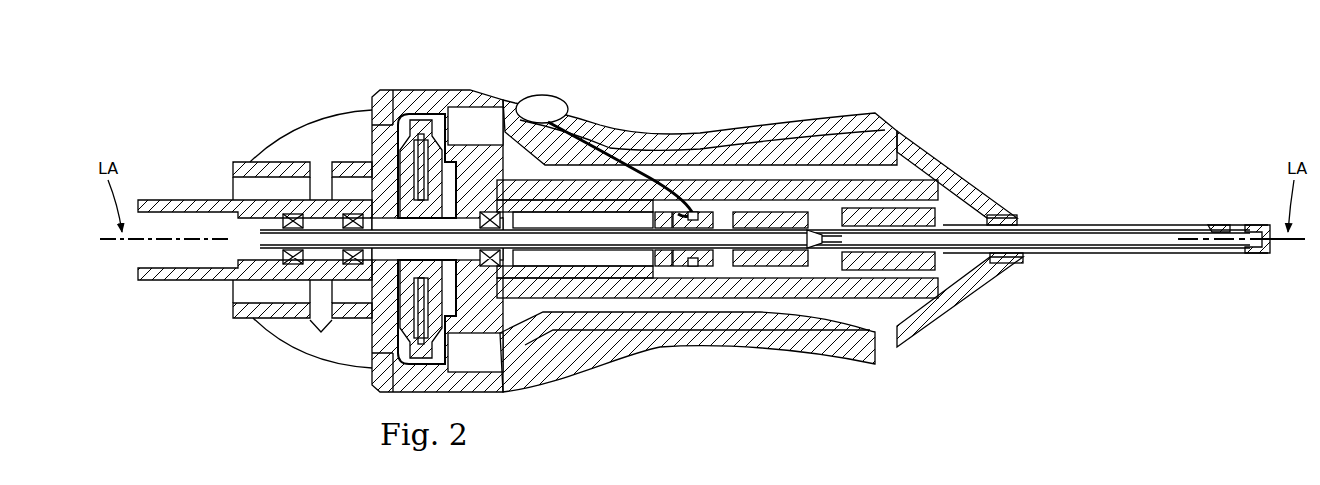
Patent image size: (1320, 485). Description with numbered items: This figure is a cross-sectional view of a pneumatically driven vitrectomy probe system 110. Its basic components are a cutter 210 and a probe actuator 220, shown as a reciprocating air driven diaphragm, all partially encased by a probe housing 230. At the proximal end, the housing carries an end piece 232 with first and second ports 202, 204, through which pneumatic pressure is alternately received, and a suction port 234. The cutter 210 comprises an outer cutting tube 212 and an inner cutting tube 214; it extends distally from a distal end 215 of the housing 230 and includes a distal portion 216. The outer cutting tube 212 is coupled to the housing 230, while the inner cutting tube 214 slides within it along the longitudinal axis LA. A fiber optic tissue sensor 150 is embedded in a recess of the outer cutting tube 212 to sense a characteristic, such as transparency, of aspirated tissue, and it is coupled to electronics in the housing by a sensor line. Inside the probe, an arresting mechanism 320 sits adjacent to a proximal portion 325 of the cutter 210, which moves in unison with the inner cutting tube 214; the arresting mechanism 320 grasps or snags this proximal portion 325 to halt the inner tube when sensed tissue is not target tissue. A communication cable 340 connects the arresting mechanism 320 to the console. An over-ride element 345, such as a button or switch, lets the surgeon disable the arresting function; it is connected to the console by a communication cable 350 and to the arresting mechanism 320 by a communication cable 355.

The vitrectomy probe system 110 is at (1001, 94).
The tissue sensor 150 is at (1222, 226).
The first port 202 is at (240, 188).
The second port 204 is at (240, 290).
The cutter 210 is at (1163, 172).
The outer cutting tube 212 is at (1110, 256).
The inner cutting tube 214 is at (893, 248).
The distal end 215 is at (1018, 223).
The distal portion 216 is at (1246, 186).
The probe actuator 220 is at (480, 284).
The probe housing 230 is at (612, 128).
The end piece 232 is at (290, 114).
The suction port 234 is at (146, 247).
The arresting mechanism 320 is at (687, 268).
The proximal portion 325 is at (723, 207).
The communication cable 340 is at (680, 198).
The over-ride element 345 is at (545, 96).
The communication cable 350 is at (423, 112).
The communication cable 355 is at (652, 196).